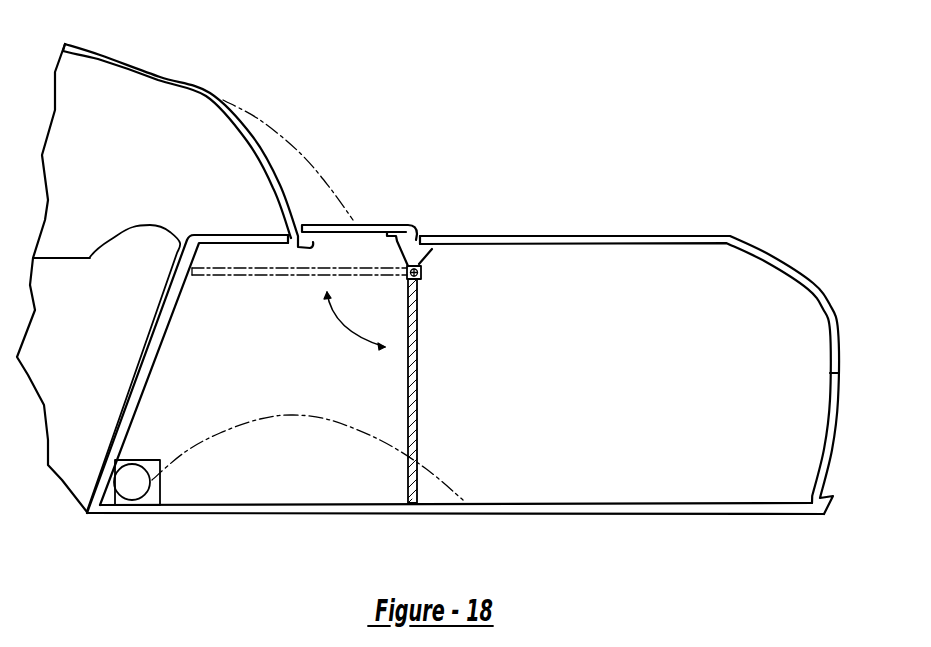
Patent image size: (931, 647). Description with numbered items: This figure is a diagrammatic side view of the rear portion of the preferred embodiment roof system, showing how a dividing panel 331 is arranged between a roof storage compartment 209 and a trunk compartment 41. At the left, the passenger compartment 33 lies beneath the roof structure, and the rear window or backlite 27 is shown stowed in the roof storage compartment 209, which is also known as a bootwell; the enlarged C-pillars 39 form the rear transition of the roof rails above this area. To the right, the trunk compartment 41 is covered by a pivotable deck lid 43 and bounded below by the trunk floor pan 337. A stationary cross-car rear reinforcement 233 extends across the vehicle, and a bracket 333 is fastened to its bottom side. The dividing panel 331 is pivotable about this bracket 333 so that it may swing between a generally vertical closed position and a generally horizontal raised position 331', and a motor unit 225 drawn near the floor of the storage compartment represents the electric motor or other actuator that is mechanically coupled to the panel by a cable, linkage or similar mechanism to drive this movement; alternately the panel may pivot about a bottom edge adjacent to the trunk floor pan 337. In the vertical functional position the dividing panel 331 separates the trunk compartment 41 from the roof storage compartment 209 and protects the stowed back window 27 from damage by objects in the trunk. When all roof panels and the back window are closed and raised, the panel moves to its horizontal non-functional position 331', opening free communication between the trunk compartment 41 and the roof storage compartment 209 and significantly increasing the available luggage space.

The rear window or backlite 27 is at (240, 130).
The passenger compartment 33 is at (109, 165).
The C-pillars 39 is at (297, 153).
The trunk compartment 41 is at (644, 375).
The deck lid 43 is at (693, 240).
The roof storage compartment 209 is at (250, 363).
The motor 225 is at (115, 502).
The rear reinforcement 233 is at (414, 237).
The dividing panel 331 is at (418, 391).
The raised position of dividing panel 331' is at (307, 384).
The bracket 333 is at (424, 274).
The trunk floor pan 337 is at (497, 513).